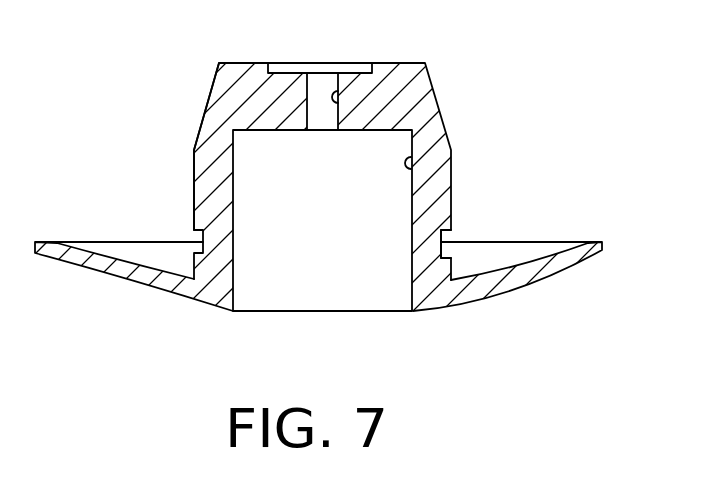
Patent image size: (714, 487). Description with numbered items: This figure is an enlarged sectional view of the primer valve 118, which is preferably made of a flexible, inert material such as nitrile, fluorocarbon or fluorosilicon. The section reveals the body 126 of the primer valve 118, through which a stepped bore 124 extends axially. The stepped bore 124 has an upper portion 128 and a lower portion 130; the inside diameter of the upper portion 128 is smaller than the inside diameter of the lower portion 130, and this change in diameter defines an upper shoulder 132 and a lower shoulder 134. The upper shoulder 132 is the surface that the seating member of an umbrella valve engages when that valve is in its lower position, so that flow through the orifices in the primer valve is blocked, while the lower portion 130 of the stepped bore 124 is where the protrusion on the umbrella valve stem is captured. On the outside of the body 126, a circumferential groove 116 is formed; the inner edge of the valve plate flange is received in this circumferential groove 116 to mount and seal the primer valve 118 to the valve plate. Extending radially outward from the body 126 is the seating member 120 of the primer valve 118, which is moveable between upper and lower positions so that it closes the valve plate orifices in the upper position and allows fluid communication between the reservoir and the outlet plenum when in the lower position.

The circumferential groove 116 is at (443, 240).
The primer valve 118 is at (457, 68).
The seating member 120 is at (604, 243).
The stepped bore 124 is at (416, 164).
The body 126 is at (195, 152).
The upper portion 128 is at (333, 98).
The lower portion 130 is at (237, 268).
The upper shoulder 132 is at (278, 75).
The lower shoulder 134 is at (274, 130).